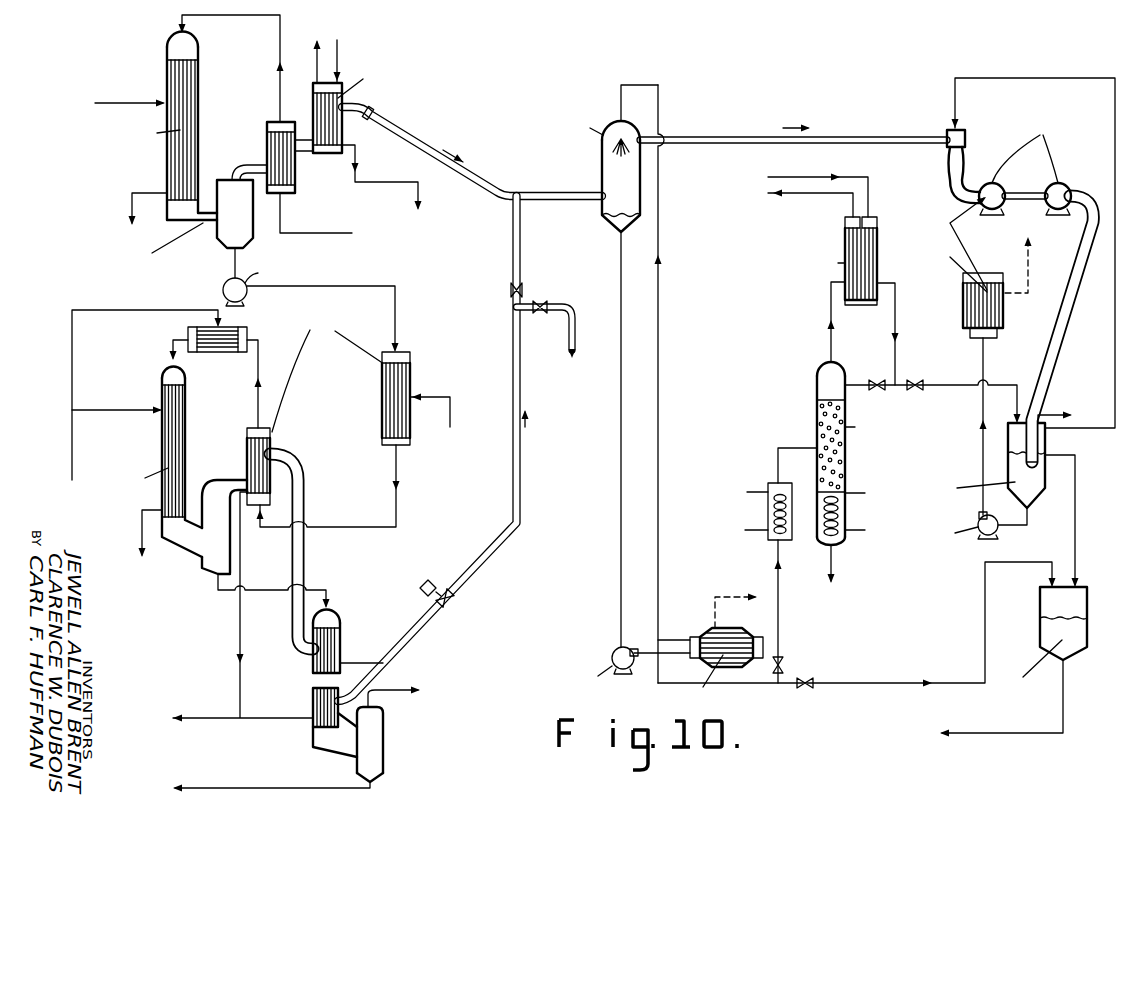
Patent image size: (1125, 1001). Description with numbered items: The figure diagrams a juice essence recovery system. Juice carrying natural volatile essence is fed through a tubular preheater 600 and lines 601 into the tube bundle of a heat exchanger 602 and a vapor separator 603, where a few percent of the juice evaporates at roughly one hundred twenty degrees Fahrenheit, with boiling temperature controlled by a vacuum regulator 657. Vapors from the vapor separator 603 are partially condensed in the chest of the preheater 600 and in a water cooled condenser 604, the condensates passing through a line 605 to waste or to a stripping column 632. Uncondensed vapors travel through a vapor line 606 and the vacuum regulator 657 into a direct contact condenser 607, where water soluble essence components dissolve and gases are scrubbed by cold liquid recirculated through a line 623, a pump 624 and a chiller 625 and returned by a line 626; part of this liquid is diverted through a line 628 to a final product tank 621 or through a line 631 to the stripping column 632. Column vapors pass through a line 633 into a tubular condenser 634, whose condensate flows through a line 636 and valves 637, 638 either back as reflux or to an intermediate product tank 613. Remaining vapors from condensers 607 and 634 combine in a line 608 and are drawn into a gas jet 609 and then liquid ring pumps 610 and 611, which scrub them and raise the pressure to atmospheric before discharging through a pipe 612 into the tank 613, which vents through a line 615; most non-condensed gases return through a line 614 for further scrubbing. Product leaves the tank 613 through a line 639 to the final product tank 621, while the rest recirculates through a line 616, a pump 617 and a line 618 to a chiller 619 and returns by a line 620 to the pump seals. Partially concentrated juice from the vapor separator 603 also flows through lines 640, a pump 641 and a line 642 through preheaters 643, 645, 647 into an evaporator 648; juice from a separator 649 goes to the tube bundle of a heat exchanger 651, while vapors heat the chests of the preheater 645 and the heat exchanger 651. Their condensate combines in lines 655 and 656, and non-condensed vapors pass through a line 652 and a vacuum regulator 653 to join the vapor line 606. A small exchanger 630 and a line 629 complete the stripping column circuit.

The tubular preheater 600 is at (296, 167).
The lines 601 is at (279, 91).
The heat exchanger 602 is at (166, 78).
The vapor separator 603 is at (253, 233).
The water cooled condenser 604 is at (347, 128).
The line 605 is at (420, 190).
The vapor line 606 is at (440, 132).
The direct contact condenser 607 is at (600, 160).
The line 608 is at (740, 136).
The gas jet 609 is at (962, 157).
The liquid ring pump 610 is at (1000, 208).
The liquid ring pump 611 is at (1060, 185).
The discharge pipe 612 is at (1066, 328).
The intermediate product tank 613 is at (1035, 496).
The line 614 is at (1115, 108).
The line 615 is at (1052, 410).
The line 616 is at (1008, 527).
The pump 617 is at (977, 518).
The line 618 is at (985, 352).
The chiller 619 is at (962, 298).
The line 620 is at (950, 223).
The final product tank 621 is at (1040, 617).
The line 623 is at (620, 386).
The pump 624 is at (612, 664).
The chiller 625 is at (747, 635).
The line 626 is at (660, 381).
The line 628 is at (847, 683).
The return line 629 is at (779, 593).
The heat exchanger 630 is at (768, 486).
The line 631 is at (797, 447).
The stripping column 632 is at (847, 463).
The line 633 is at (830, 316).
The tubular condenser 634 is at (845, 238).
The line 636 is at (896, 317).
The valve 637 is at (877, 392).
The valve 638 is at (915, 392).
The line 639 is at (1076, 501).
The lines 640 is at (233, 267).
The pump 641 is at (247, 296).
The line 642 is at (362, 283).
The preheater 643 is at (382, 384).
The preheater 645 is at (247, 442).
The preheater 647 is at (212, 353).
The evaporator 648 is at (162, 445).
The separator 649 is at (204, 568).
The heat exchanger 651 is at (341, 640).
The line 652 is at (512, 541).
The vacuum regulator 653 is at (418, 597).
The line 655 is at (239, 652).
The line 656 is at (258, 720).
The vacuum regulator 657 is at (371, 108).